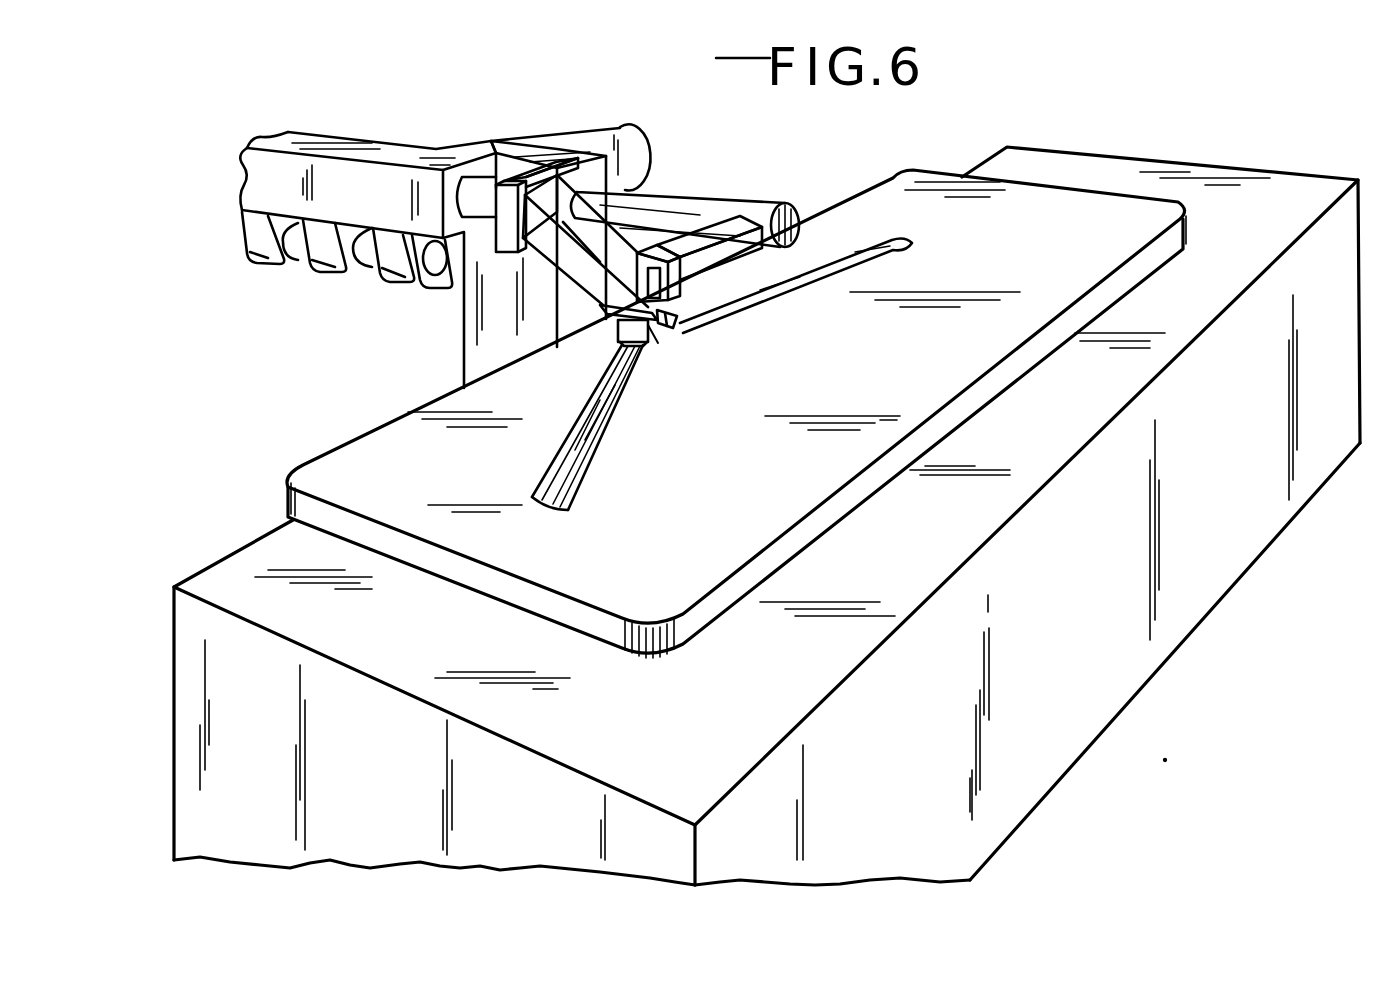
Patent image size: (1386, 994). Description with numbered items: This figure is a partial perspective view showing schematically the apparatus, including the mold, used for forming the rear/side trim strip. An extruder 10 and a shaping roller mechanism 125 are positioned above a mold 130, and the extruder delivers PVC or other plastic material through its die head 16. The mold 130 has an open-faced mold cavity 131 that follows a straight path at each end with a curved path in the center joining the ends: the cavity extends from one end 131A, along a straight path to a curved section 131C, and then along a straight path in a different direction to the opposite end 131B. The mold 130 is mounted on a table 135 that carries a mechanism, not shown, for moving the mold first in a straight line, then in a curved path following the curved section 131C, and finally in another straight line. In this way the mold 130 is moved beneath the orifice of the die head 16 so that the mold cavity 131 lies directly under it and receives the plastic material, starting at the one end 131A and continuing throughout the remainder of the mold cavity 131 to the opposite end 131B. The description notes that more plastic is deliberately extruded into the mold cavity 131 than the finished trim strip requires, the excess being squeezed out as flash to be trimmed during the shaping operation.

The extruder 10 is at (399, 143).
The die head 16 is at (612, 336).
The shaping roller mechanism 125 is at (688, 333).
The mold 130 is at (741, 504).
The mold cavity 131 is at (558, 472).
The one end of mold cavity 131A is at (908, 243).
The opposite end of mold cavity 131B is at (552, 516).
The curved section of mold cavity 131C is at (653, 345).
The table 135 is at (720, 745).